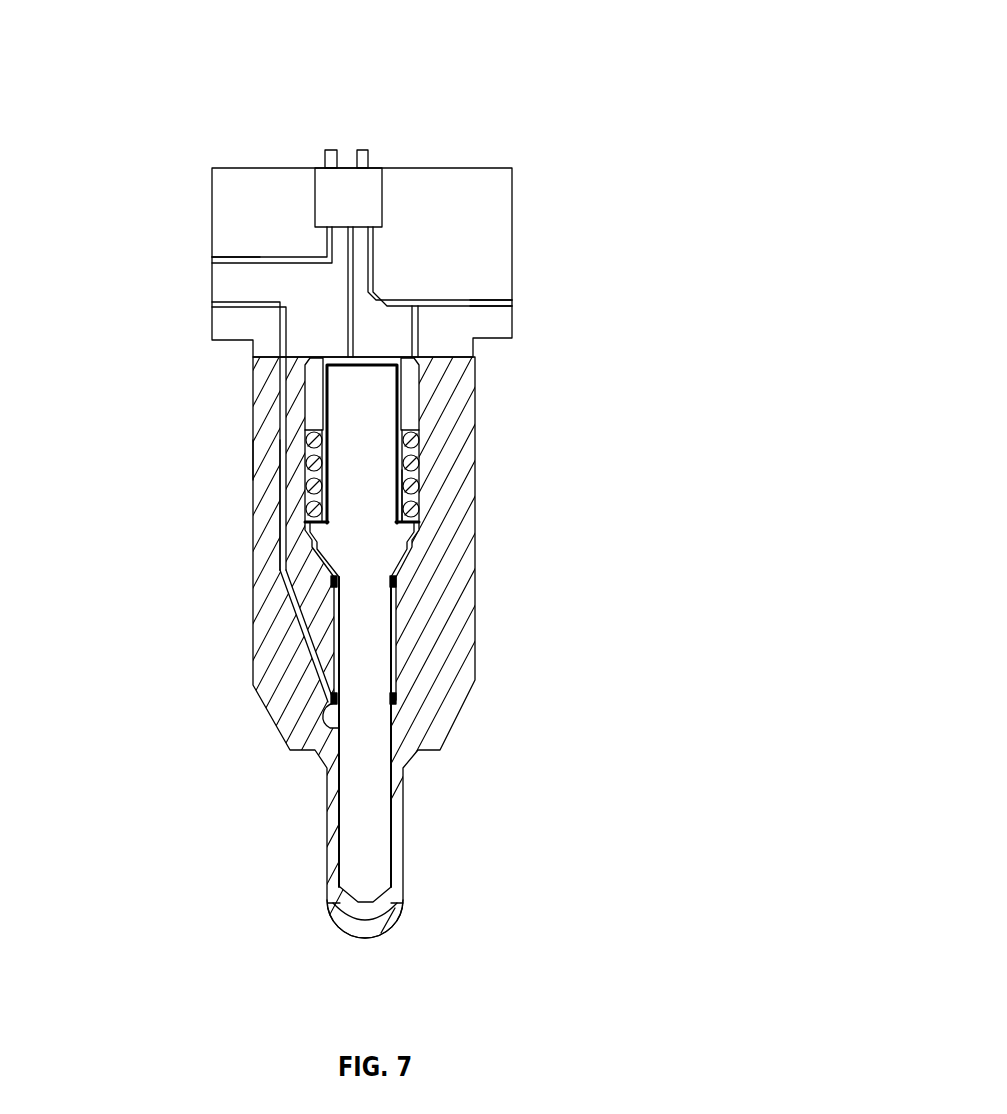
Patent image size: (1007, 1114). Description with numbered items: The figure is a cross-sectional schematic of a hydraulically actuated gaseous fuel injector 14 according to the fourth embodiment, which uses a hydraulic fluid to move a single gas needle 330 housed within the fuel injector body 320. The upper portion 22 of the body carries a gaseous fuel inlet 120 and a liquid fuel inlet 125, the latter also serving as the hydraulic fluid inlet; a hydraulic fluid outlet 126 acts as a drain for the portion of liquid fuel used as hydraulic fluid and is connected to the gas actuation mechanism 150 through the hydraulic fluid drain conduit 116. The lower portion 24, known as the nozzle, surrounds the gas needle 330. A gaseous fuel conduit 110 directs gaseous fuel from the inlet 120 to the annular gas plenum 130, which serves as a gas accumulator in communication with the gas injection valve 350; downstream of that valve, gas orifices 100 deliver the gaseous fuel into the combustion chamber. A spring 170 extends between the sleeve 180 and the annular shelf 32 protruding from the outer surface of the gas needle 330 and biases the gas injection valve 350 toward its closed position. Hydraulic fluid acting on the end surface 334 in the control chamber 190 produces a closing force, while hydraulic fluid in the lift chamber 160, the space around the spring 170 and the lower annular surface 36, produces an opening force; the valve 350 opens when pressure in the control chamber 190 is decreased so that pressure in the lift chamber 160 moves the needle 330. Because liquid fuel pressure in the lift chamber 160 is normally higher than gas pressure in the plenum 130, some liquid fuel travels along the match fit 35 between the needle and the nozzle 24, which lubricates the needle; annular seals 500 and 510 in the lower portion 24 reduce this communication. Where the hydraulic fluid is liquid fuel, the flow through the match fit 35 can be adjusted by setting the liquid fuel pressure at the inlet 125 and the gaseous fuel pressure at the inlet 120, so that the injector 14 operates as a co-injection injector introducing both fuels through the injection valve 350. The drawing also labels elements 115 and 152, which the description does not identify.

The hydraulically actuated gaseous fuel injector 14 is at (618, 118).
The upper portion of injector body 22 is at (212, 217).
The lower portion of injector body 24 is at (253, 623).
The annular shelf 32 is at (305, 515).
The match fit 35 is at (392, 653).
The lower annular surface 36 is at (417, 565).
The gas orifices 100 is at (328, 912).
The gaseous fuel conduit 110 is at (285, 498).
The return passage 115 is at (488, 303).
The hydraulic fluid drain conduit 116 is at (225, 256).
The gaseous fuel inlet 120 is at (212, 303).
The liquid fuel inlet 125 is at (512, 302).
The hydraulic fluid outlet 126 is at (212, 258).
The annular gas plenum 130 is at (334, 712).
The gas actuation mechanism 150 is at (357, 197).
The control passage 152 is at (347, 293).
The lift chamber 160 is at (423, 488).
The spring 170 is at (420, 440).
The sleeve 180 is at (318, 410).
The control chamber 190 is at (383, 362).
The fuel injector body 320 is at (253, 458).
The gas needle 330 is at (362, 825).
The end surface 334 is at (337, 363).
The gas injection valve 350 is at (340, 890).
The annular seal 500 is at (397, 578).
The annular seal 510 is at (397, 697).